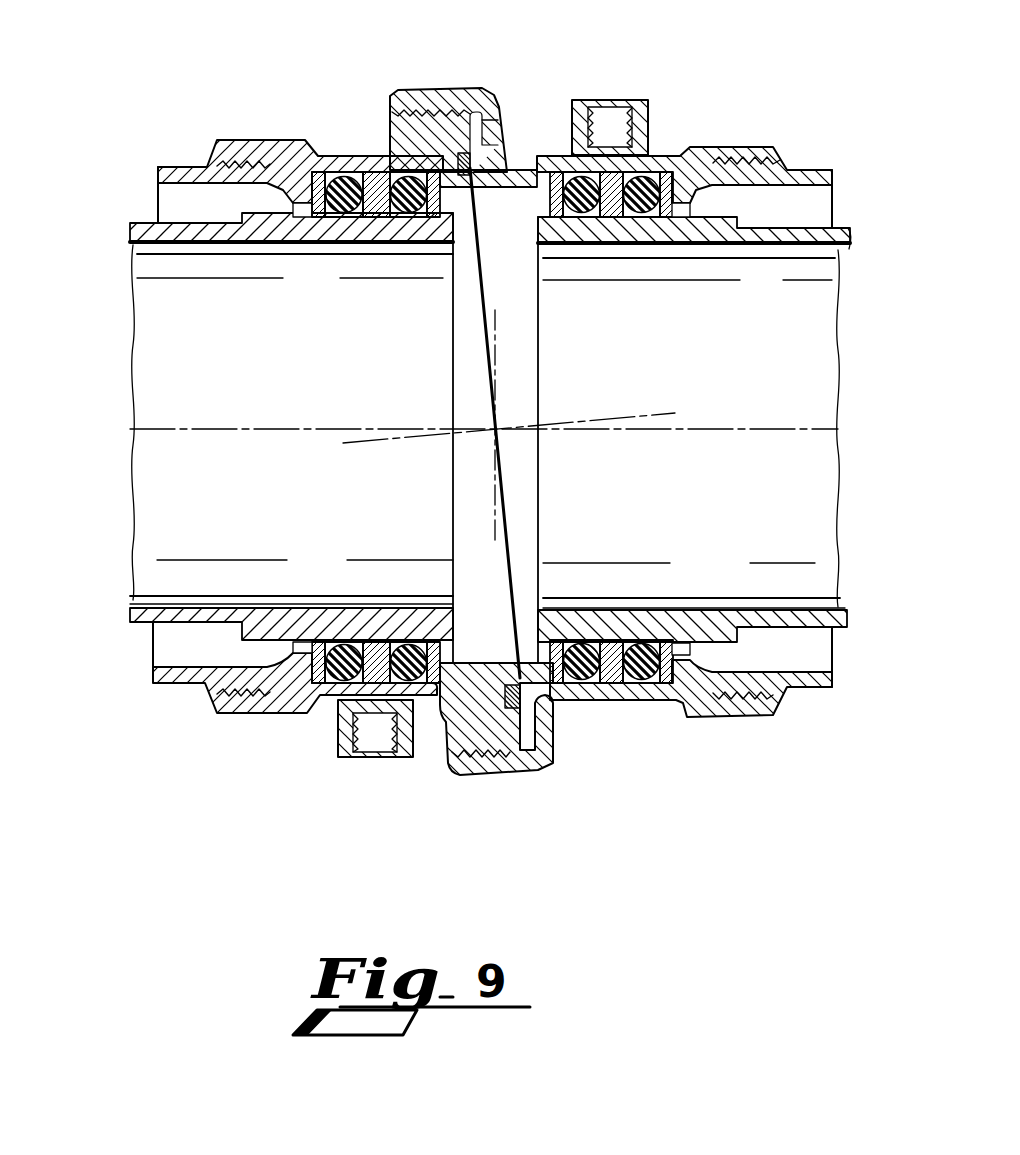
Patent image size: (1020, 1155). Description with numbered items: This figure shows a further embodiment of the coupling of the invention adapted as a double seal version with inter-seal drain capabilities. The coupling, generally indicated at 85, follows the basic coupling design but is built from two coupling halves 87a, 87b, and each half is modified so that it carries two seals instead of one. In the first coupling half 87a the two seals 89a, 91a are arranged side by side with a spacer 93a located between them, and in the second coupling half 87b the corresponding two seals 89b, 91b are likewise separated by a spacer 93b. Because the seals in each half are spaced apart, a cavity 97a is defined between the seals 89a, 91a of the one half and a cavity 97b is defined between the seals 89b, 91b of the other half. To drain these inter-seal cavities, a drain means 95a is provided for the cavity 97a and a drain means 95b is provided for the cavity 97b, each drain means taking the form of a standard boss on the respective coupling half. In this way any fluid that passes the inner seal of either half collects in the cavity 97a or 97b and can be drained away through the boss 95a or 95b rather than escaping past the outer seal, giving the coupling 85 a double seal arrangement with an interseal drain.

The coupling 85 is at (676, 88).
The coupling half 87a is at (750, 150).
The coupling half 87b is at (310, 152).
The seal 89a is at (652, 162).
The seal 89b is at (352, 110).
The seal 91a is at (568, 133).
The seal 91b is at (420, 110).
The spacer 93a is at (613, 681).
The spacer 93b is at (320, 720).
The drain means 95a is at (620, 99).
The drain means 95b is at (370, 756).
The cavity 97a is at (655, 641).
The cavity 97b is at (379, 600).